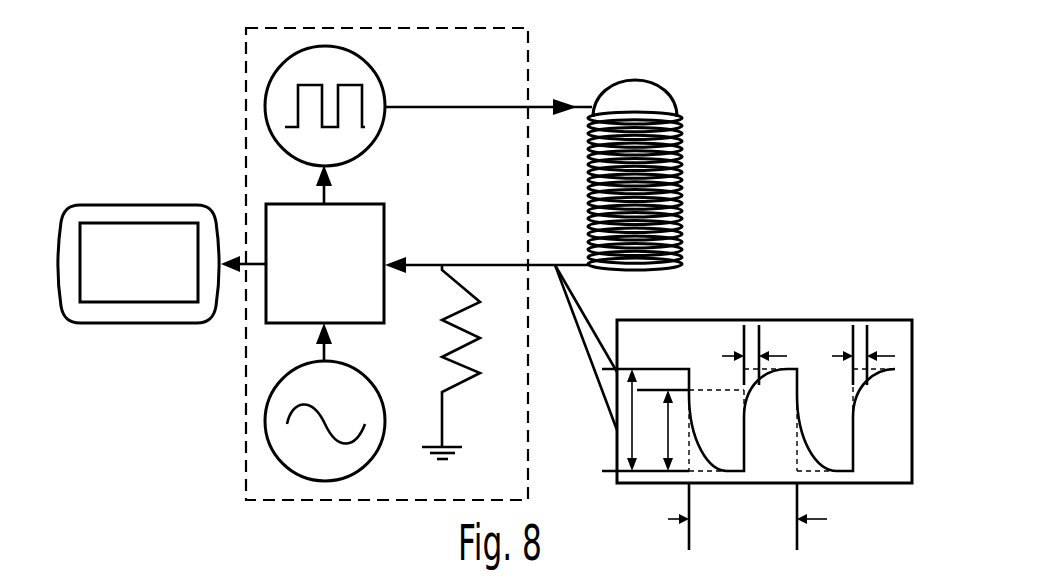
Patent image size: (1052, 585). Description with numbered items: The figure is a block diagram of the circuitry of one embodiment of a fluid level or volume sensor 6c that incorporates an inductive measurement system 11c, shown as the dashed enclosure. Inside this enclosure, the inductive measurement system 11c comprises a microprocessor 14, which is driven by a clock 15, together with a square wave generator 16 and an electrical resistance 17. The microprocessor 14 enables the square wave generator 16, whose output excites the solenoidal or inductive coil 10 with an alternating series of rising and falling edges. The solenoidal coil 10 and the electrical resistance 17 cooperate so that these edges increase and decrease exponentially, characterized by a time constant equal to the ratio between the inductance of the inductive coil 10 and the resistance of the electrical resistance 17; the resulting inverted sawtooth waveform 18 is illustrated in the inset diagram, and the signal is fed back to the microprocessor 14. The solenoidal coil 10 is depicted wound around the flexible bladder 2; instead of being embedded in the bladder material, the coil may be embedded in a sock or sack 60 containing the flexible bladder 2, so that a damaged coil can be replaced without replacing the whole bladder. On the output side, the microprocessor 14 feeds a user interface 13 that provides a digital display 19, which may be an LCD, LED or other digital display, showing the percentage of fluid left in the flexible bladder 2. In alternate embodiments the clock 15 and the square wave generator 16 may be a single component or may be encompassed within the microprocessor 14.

The flexible bladder 2 is at (636, 92).
The sock or sack 60 is at (676, 110).
The solenoidal coil 10 is at (664, 162).
The inductive measurement system 11c is at (245, 65).
The user interface 13 is at (162, 307).
The microprocessor 14 is at (386, 222).
The clock 15 is at (372, 457).
The square wave generator 16 is at (383, 122).
The electrical resistance 17 is at (462, 382).
The inverted sawtooth waveform 18 is at (775, 318).
The digital display 19 is at (138, 223).
The fluid level or volume sensor 6c is at (808, 152).